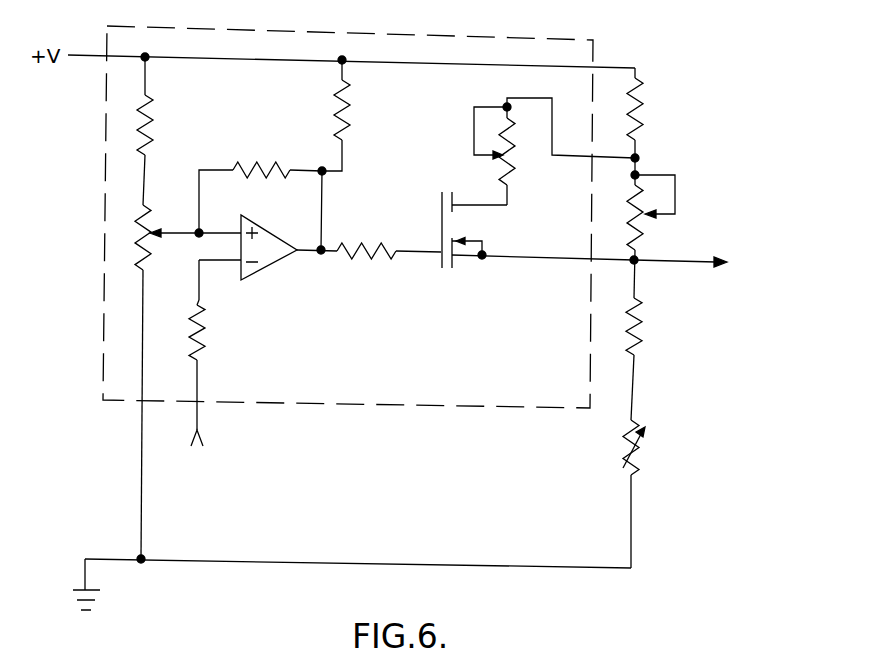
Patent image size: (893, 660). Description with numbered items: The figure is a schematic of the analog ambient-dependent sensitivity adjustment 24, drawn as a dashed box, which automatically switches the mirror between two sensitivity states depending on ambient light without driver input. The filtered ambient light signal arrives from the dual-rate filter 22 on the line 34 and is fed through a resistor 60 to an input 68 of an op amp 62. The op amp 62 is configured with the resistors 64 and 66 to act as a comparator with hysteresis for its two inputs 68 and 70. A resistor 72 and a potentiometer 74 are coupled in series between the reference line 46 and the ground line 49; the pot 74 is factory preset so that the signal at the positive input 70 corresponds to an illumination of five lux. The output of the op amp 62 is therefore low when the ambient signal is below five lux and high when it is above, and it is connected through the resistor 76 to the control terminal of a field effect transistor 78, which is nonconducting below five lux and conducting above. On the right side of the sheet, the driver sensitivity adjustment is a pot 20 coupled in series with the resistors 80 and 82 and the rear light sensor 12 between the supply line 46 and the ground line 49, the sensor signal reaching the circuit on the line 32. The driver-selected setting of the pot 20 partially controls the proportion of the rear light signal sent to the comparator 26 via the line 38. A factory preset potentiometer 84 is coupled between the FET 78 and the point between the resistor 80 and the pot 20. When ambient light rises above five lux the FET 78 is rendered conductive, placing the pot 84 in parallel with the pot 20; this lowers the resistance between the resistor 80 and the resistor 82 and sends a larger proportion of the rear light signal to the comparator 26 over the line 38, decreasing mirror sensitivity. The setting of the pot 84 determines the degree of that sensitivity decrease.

The reference line 46 is at (85, 53).
The ambient-dependent sensitivity adjustment 24 is at (342, 28).
The resistor 72 is at (148, 124).
The potentiometer 74 is at (150, 212).
The resistor 64 is at (256, 168).
The resistor 66 is at (350, 112).
The positive input 70 is at (240, 232).
The input 68 is at (240, 259).
The op amp 62 is at (268, 263).
The resistor 76 is at (372, 257).
The field effect transistor 78 is at (447, 272).
The potentiometer 84 is at (507, 168).
The resistor 80 is at (645, 112).
The comparator 26 is at (745, 197).
The driver sensitivity adjustment pot 20 is at (655, 234).
The line 38 is at (656, 263).
The resistor 82 is at (645, 320).
The line 32 is at (636, 380).
The rear light sensor 12 is at (637, 467).
The resistor 60 is at (205, 328).
The line 34 is at (198, 415).
The dual-rate filter 22 is at (236, 493).
The ground line 49 is at (123, 561).